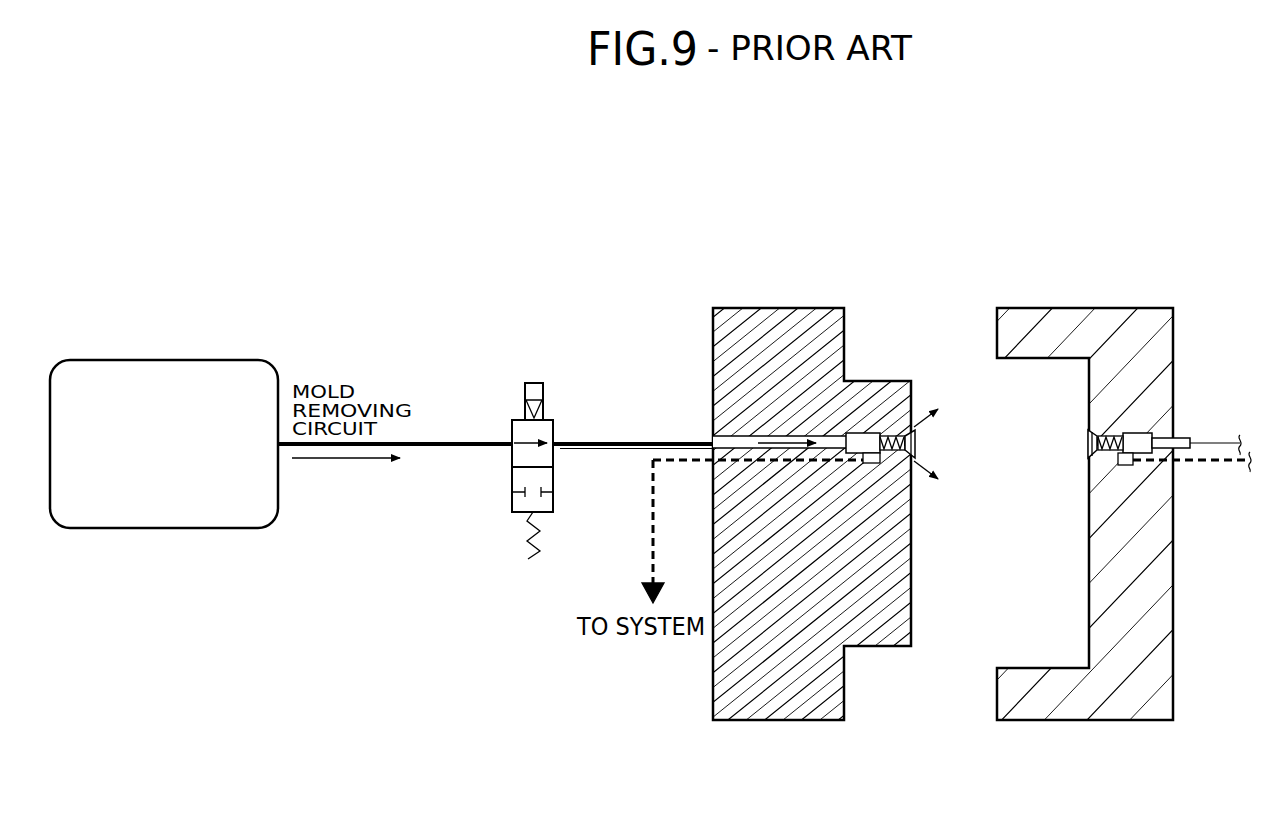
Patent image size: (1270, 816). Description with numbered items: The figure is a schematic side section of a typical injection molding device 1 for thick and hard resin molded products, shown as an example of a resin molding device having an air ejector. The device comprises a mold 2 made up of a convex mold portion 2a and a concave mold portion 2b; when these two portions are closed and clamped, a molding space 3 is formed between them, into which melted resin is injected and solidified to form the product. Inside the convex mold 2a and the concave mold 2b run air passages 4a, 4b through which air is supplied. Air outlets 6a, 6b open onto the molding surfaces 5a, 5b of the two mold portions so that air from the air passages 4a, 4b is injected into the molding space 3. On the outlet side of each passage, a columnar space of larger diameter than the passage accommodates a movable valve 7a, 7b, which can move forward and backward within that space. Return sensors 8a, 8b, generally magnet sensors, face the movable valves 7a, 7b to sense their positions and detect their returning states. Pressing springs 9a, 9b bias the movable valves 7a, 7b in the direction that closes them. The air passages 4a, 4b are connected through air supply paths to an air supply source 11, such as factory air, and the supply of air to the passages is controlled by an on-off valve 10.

The injection molding device 1 is at (1067, 198).
The mold 2 is at (710, 492).
The convex mold portion 2a is at (775, 307).
The concave mold portion 2b is at (1120, 307).
The molding space 3 is at (1024, 377).
The air passage 4a is at (851, 440).
The air passage 4b is at (1129, 480).
The molding surface 5a is at (911, 600).
The molding surface 5b is at (1089, 628).
The air outlet 6a is at (915, 452).
The air outlet 6b is at (1090, 455).
The movable valve 7a is at (912, 435).
The movable valve 7b is at (1088, 445).
The return sensor 8a is at (880, 463).
The return sensor 8b is at (1123, 466).
The pressing spring 9a is at (898, 456).
The pressing spring 9b is at (1100, 455).
The on-off valve 10 is at (544, 391).
The air supply source 11 is at (177, 360).